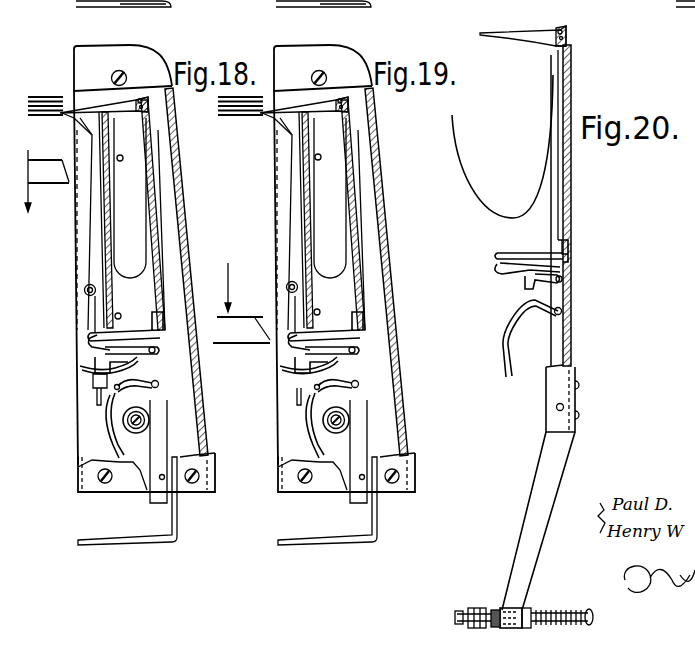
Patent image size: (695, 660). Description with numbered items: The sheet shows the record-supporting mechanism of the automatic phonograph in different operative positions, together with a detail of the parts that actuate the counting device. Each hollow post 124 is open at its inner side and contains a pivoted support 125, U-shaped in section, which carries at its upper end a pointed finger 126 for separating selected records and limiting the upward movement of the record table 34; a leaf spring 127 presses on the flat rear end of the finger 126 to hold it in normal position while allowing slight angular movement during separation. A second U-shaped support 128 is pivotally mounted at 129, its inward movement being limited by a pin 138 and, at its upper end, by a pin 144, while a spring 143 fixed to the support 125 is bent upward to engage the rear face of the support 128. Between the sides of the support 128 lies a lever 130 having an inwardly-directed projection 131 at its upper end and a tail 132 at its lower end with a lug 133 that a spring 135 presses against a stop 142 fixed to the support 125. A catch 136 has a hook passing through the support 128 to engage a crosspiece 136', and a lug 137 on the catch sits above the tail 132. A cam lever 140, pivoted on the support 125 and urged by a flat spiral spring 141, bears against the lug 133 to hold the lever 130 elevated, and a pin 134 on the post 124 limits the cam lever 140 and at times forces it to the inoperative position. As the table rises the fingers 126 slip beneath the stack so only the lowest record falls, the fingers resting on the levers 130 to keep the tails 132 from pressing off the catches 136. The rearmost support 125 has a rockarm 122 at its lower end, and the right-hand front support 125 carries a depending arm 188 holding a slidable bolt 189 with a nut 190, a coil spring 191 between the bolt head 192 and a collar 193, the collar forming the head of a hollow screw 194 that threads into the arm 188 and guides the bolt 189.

In FIG. 18, the record table 34 is at (47, 154).
In FIG. 19, the record table 34 is at (241, 220).
In FIG. 18, the rockarm 122 is at (139, 540).
In FIG. 19, the rockarm 122 is at (327, 501).
In FIG. 18, the post 124 is at (181, 214).
In FIG. 19, the post 124 is at (393, 272).
In FIG. 18, the pivoted support 125 is at (162, 243).
In FIG. 19, the pivoted support 125 is at (394, 230).
In FIG. 18, the pointed finger 126 is at (115, 110).
In FIG. 19, the pointed finger 126 is at (304, 119).
In FIG. 20, the pointed finger 126 is at (518, 38).
In FIG. 19, the leaf spring 127 is at (379, 215).
In FIG. 20, the leaf spring 127 is at (571, 52).
In FIG. 18, the support 128 is at (80, 230).
In FIG. 19, the support 128 is at (254, 230).
In FIG. 18, the pivot 129 is at (84, 290).
In FIG. 19, the pivot 129 is at (266, 305).
In FIG. 18, the lever 130 is at (88, 208).
In FIG. 19, the lever 130 is at (260, 224).
In FIG. 18, the inwardly-directed projection 131 is at (80, 118).
In FIG. 19, the inwardly-directed projection 131 is at (248, 129).
In FIG. 18, the tail 132 is at (127, 365).
In FIG. 19, the tail 132 is at (360, 355).
In FIG. 18, the lug 133 is at (97, 397).
In FIG. 19, the lug 133 is at (270, 398).
In FIG. 18, the pin 134 is at (100, 380).
In FIG. 18, the spring 135 is at (100, 492).
In FIG. 19, the spring 135 is at (346, 457).
In FIG. 18, the catch 136 is at (71, 342).
In FIG. 19, the catch 136 is at (271, 351).
In FIG. 20, the catch 136 is at (504, 269).
In FIG. 18, the crosspiece 136' is at (80, 364).
In FIG. 19, the crosspiece 136' is at (280, 371).
In FIG. 18, the lug 137 is at (157, 350).
In FIG. 19, the lug 137 is at (332, 326).
In FIG. 20, the lug 137 is at (525, 283).
In FIG. 18, the pin 138 is at (118, 312).
In FIG. 19, the pin 138 is at (331, 295).
In FIG. 18, the cam lever 140 is at (157, 386).
In FIG. 19, the cam lever 140 is at (378, 374).
In FIG. 20, the cam lever 140 is at (510, 330).
In FIG. 18, the spring 141 is at (121, 433).
In FIG. 19, the spring 141 is at (330, 425).
In FIG. 18, the stop 142 is at (157, 332).
In FIG. 19, the stop 142 is at (363, 326).
In FIG. 20, the stop 142 is at (508, 253).
In FIG. 18, the spring 143 is at (112, 237).
In FIG. 19, the spring 143 is at (325, 198).
In FIG. 20, the spring 143 is at (483, 188).
In FIG. 18, the pin 144 is at (120, 161).
In FIG. 19, the pin 144 is at (323, 170).
In FIG. 20, the depending arm 188 is at (534, 535).
In FIG. 20, the bolt 189 is at (551, 610).
In FIG. 20, the nut 190 is at (467, 612).
In FIG. 20, the coil spring 191 is at (560, 621).
In FIG. 20, the head 192 is at (597, 627).
In FIG. 20, the collar 193 is at (528, 608).
In FIG. 20, the hollow screw 194 is at (497, 608).